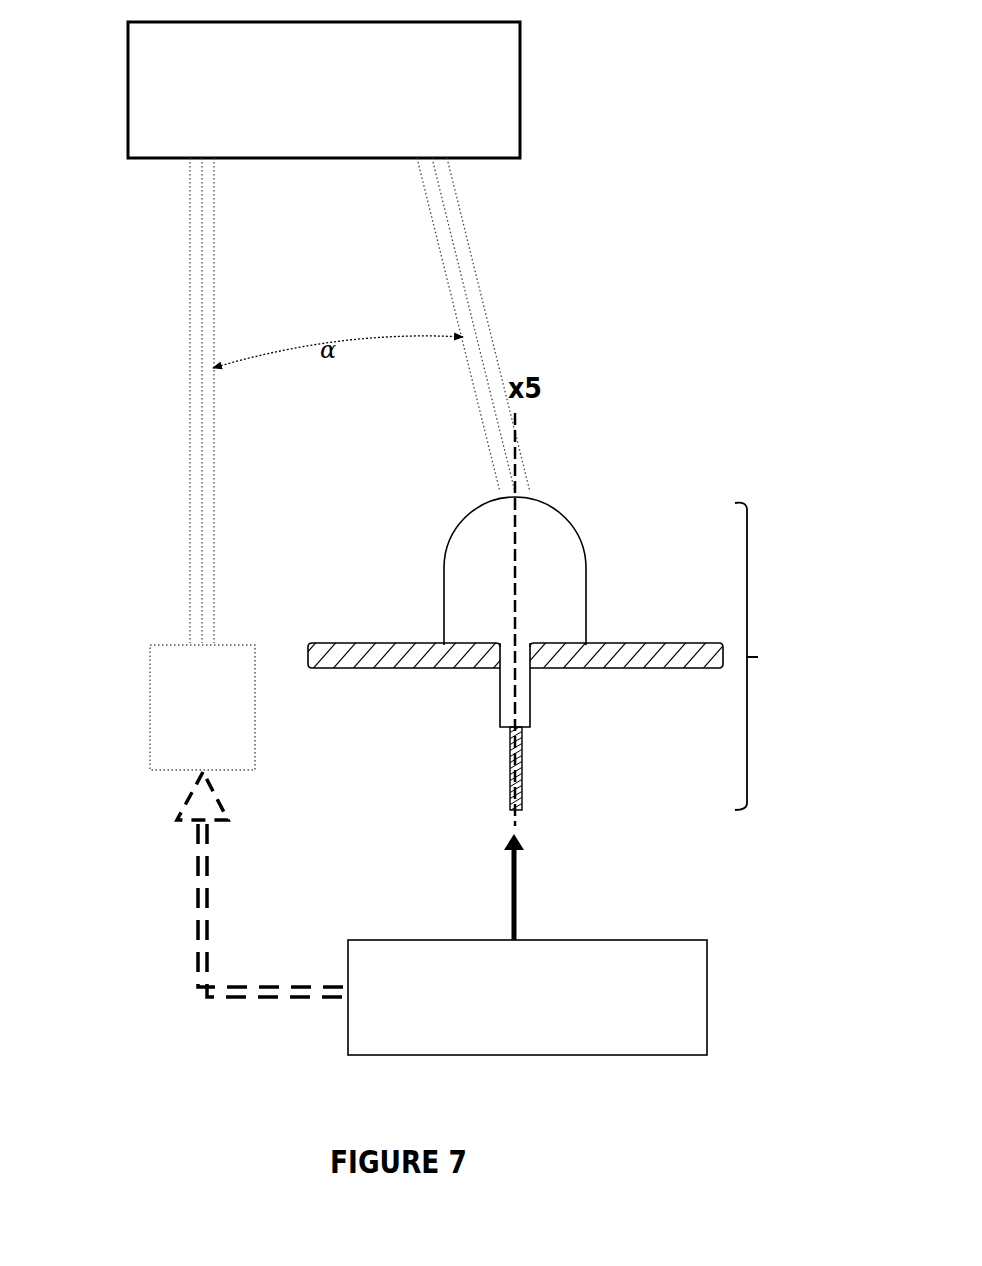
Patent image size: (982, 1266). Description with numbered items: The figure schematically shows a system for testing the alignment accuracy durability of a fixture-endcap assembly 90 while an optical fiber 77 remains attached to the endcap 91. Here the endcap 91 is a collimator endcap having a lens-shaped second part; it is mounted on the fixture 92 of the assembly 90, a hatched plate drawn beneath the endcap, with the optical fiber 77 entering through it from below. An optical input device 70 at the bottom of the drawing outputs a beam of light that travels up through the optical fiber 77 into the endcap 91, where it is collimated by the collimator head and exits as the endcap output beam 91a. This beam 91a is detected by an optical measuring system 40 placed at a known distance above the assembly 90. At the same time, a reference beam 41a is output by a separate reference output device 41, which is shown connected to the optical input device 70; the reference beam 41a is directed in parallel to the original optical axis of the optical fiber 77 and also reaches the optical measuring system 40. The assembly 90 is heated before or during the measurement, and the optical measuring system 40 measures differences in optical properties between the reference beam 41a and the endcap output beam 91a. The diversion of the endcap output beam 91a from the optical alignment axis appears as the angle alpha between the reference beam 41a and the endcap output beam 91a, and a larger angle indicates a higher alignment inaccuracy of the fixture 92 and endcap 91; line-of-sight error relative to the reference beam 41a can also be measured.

The optical measuring system 40 is at (324, 90).
The reference output device 41 is at (202, 707).
The reference beam 41a is at (184, 493).
The optical input device 70 is at (527, 944).
The optical fiber 77 is at (508, 768).
The fixture-endcap assembly 90 is at (773, 656).
The endcap 91 is at (470, 592).
The endcap output beam 91a is at (519, 455).
The holder / plate 92 is at (414, 669).